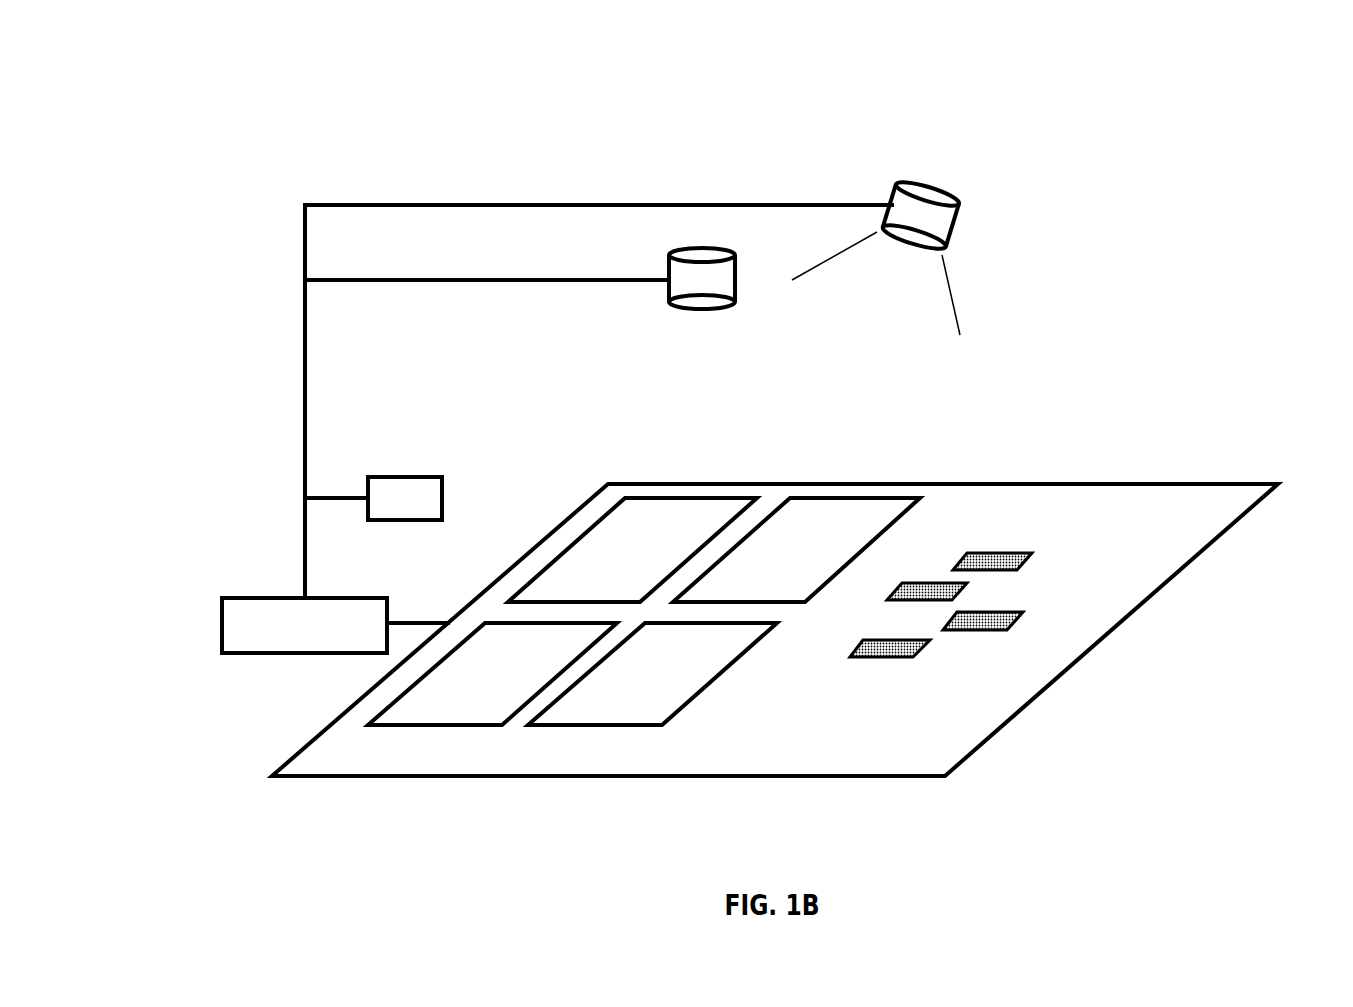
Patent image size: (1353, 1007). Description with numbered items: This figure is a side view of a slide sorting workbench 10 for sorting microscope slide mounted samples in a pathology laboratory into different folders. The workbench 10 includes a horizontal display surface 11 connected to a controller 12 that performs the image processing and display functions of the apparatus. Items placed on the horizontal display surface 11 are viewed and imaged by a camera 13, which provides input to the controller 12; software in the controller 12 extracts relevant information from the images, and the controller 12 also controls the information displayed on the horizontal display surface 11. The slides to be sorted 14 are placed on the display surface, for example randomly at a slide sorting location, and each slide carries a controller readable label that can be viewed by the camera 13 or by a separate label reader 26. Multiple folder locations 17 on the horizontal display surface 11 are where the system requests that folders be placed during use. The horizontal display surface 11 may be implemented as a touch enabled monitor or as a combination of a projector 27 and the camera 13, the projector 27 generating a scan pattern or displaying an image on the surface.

The workbench 10 is at (317, 138).
The horizontal display surface 11 is at (1157, 520).
The controller 12 is at (300, 653).
The camera 13 is at (668, 292).
The slides to be sorted 14 is at (1002, 557).
The folder locations 17 is at (555, 622).
The label reader 26 is at (442, 495).
The projector 27 is at (952, 223).